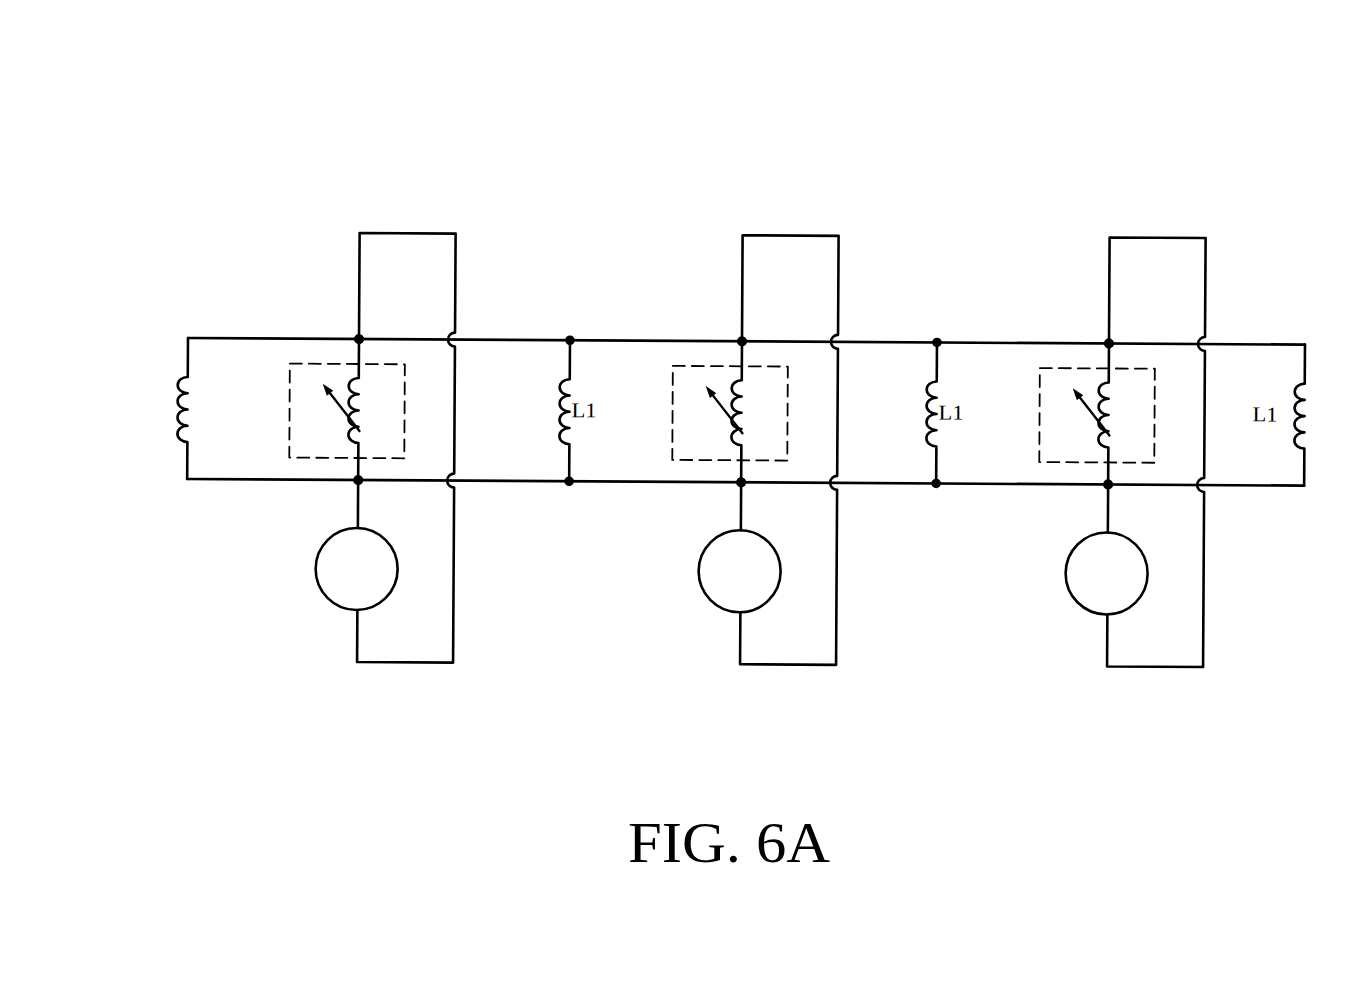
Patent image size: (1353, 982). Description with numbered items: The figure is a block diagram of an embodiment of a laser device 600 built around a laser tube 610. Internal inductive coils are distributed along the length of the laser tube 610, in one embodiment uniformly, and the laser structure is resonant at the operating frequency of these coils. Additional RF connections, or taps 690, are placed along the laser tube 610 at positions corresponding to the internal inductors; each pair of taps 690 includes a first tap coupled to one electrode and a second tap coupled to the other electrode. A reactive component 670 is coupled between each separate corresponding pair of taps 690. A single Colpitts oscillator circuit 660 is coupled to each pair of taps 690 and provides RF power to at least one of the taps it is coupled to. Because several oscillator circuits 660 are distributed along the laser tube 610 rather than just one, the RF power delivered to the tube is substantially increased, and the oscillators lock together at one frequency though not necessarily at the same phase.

The laser device 600 is at (738, 58).
The laser tube 610 is at (148, 409).
The oscillator circuit 660 is at (329, 540).
The reactive component 670 is at (290, 420).
The tap 690 is at (359, 338).